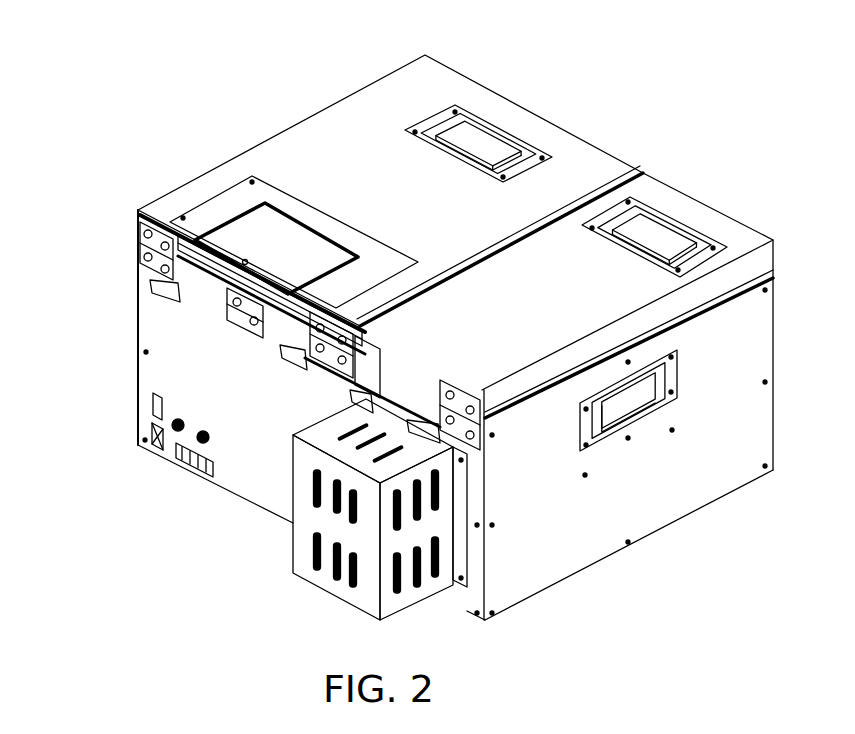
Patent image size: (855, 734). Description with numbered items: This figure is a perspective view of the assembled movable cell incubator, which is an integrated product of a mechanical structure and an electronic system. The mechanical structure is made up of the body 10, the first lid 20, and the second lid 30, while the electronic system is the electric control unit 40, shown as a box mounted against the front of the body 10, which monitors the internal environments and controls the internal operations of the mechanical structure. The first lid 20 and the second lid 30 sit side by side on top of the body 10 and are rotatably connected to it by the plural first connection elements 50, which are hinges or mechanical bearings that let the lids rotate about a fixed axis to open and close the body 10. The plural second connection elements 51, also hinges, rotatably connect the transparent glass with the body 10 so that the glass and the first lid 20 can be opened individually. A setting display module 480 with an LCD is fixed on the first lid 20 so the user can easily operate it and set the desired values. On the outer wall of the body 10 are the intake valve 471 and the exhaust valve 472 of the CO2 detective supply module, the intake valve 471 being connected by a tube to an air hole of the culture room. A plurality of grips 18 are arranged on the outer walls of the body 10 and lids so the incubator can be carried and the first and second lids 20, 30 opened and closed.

The body 10 is at (130, 377).
The first lid 20 is at (542, 111).
The second lid 30 is at (715, 195).
The setting display module 480 is at (258, 228).
The first connection element 50 is at (125, 264).
The second connection element 51 is at (238, 332).
The intake valve 471 is at (172, 440).
The exhaust valve 472 is at (207, 443).
The electric control unit 40 is at (270, 559).
The grip 18 is at (627, 420).